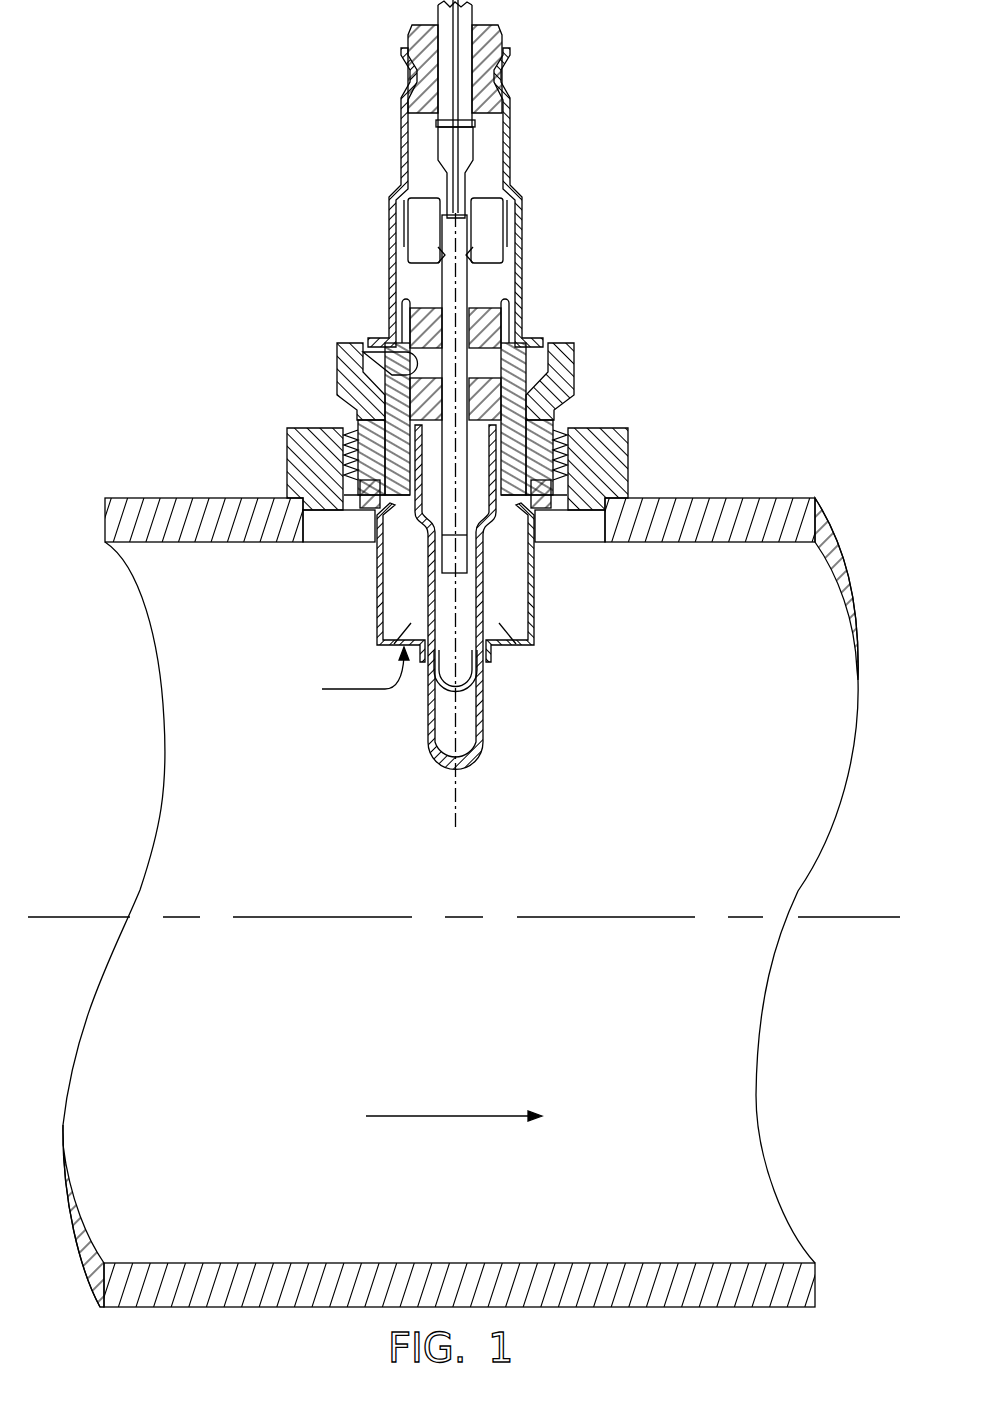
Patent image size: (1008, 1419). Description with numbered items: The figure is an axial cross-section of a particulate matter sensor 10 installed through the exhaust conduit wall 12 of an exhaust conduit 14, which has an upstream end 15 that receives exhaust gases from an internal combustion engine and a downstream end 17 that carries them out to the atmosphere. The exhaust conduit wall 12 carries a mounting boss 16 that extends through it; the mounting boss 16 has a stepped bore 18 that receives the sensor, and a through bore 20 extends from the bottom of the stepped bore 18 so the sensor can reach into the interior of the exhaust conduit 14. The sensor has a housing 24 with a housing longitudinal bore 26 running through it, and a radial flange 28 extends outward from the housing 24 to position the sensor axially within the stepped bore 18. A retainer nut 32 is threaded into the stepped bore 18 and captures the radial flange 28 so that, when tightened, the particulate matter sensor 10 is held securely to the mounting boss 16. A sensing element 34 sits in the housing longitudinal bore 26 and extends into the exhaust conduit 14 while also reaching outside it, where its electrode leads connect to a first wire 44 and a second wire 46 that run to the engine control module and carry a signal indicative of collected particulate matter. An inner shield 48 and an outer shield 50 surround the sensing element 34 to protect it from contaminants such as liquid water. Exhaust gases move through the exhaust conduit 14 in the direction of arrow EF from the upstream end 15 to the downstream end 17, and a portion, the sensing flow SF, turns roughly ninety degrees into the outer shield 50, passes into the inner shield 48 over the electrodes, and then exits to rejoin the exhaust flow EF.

The particulate matter sensor 10 is at (564, 195).
The exhaust conduit wall 12 is at (632, 516).
The exhaust conduit 14 is at (756, 575).
The upstream end 15 is at (216, 657).
The mounting boss 16 is at (297, 430).
The downstream end 17 is at (787, 722).
The stepped bore 18 is at (358, 497).
The through bore 20 is at (538, 428).
The housing 24 is at (515, 362).
The housing longitudinal bore 26 is at (363, 353).
The radial flange 28 is at (540, 478).
The retainer nut 32 is at (340, 368).
The sensing element 34 is at (452, 277).
The first wire 44 is at (447, 43).
The second wire 46 is at (463, 43).
The inner shield 48 is at (395, 607).
The outer shield 50 is at (365, 562).
The sensing flow SF is at (365, 686).
The exhaust flow EF is at (454, 1102).